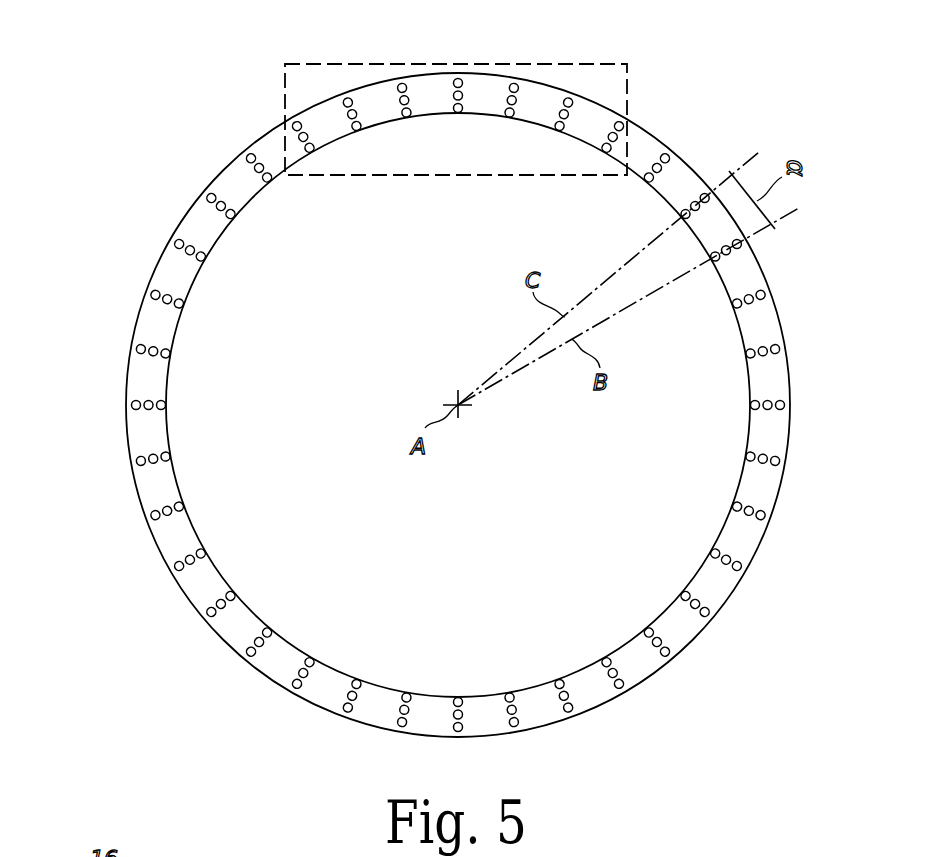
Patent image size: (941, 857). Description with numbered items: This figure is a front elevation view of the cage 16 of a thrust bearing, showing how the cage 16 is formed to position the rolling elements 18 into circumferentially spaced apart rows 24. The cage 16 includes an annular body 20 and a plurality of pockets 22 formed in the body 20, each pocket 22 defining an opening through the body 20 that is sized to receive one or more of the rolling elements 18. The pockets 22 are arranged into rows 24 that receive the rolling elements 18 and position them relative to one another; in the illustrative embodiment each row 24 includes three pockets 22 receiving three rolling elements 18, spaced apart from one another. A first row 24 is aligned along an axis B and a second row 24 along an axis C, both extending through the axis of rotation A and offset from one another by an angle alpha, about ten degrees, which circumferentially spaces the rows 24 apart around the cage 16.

The cage 16 is at (444, 368).
The rolling elements 18 is at (399, 68).
The body 20 is at (228, 176).
The pockets 22 is at (681, 213).
The rows 24 is at (692, 180).